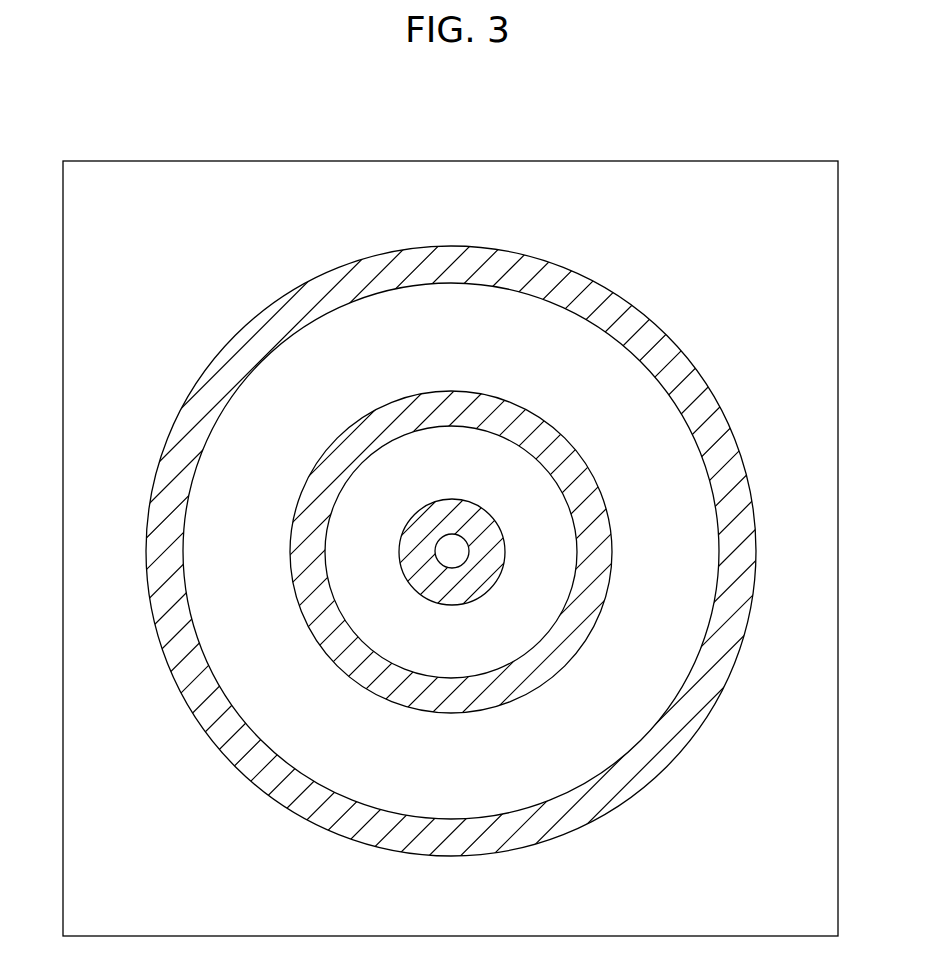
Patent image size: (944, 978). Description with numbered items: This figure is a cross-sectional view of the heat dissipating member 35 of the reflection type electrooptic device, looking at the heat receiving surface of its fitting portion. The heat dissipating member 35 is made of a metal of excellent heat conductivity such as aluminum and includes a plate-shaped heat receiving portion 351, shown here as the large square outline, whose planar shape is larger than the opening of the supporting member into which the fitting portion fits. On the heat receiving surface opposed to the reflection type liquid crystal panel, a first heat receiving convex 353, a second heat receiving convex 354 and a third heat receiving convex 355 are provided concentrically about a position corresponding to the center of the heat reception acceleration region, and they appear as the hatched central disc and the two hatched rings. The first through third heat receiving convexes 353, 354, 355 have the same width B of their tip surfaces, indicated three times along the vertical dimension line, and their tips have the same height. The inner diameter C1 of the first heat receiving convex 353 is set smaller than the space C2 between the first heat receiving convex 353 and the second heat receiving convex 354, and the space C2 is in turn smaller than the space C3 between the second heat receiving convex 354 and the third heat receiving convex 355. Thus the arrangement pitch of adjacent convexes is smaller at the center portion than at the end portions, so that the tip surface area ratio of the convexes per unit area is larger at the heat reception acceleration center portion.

The heat dissipating member 35 is at (472, 154).
The heat receiving portion 351 is at (677, 185).
The first heat receiving convex 353 is at (475, 575).
The second heat receiving convex 354 is at (593, 578).
The third heat receiving convex 355 is at (730, 473).
The width B is at (453, 605).
The inner diameter C1 is at (453, 548).
The space C2 is at (474, 472).
The space C3 is at (474, 342).